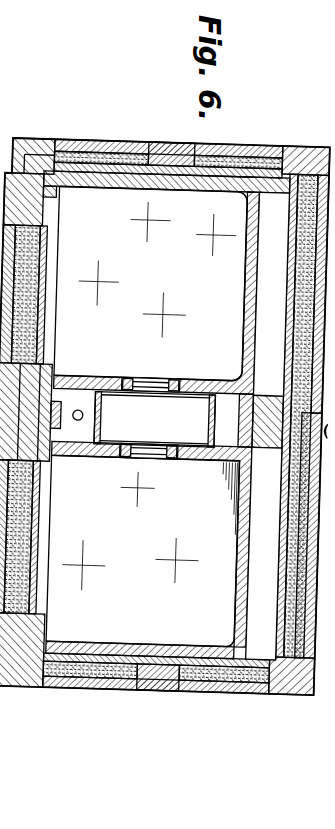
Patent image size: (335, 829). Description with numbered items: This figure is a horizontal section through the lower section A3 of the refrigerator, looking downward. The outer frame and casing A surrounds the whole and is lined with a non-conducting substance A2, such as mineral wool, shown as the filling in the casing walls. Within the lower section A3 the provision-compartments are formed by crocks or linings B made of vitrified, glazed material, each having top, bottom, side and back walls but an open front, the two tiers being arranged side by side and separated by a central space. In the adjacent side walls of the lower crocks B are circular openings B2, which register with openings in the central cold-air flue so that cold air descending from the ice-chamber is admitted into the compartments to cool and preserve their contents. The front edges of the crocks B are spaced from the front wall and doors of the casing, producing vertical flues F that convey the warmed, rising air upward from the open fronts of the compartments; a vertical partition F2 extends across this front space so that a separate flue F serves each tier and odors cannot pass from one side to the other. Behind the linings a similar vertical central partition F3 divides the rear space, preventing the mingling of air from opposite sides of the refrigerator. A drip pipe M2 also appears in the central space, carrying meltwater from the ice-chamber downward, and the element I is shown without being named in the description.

The outer frame and casing A is at (220, 559).
The non-conducting substance A2 is at (262, 552).
The lower section A3 is at (245, 425).
The crock B is at (146, 416).
The opening B2 is at (150, 411).
The damper box I is at (154, 420).
The pipe M2 is at (87, 451).
The vertical partition F2 is at (41, 431).
The vertical central partition F3 is at (286, 534).
The flue F is at (55, 538).